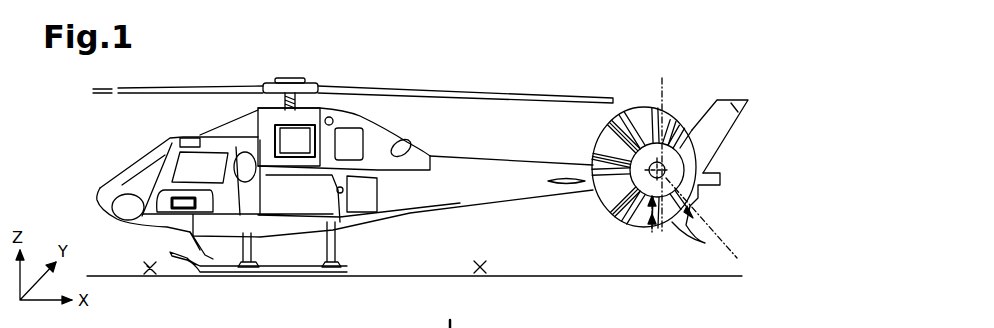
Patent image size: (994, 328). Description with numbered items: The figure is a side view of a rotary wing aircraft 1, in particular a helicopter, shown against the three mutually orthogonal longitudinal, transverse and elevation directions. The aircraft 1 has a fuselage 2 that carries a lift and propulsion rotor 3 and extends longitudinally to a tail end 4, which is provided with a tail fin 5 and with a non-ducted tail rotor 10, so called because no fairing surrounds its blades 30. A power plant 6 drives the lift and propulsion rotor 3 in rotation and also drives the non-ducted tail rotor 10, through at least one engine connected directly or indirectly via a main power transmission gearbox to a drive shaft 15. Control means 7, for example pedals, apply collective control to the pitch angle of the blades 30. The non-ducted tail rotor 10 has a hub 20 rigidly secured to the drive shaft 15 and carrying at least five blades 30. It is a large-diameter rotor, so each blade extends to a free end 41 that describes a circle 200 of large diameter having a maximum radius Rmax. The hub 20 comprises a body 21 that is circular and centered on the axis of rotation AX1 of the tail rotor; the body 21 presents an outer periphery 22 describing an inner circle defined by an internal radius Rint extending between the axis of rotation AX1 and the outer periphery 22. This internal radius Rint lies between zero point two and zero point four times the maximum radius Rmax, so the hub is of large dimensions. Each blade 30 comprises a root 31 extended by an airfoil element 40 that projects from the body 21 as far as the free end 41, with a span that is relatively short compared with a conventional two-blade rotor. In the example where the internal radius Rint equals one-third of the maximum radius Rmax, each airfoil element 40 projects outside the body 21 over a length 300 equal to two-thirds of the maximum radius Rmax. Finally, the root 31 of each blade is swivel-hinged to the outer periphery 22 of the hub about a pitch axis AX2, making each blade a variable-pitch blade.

The rotary wing aircraft 1 is at (142, 245).
The fuselage 2 is at (410, 213).
The lift and propulsion rotor 3 is at (318, 68).
The tail end 4 is at (733, 55).
The tail fin 5 is at (747, 100).
The power plant 6 is at (289, 137).
The control means 7 is at (167, 185).
The non-ducted tail rotor 10 is at (668, 228).
The drive shaft 15 is at (694, 197).
The hub 20 is at (603, 185).
The body 21 is at (625, 195).
The outer periphery 22 is at (599, 153).
The blade 30 is at (641, 198).
The root 31 is at (616, 138).
The airfoil element 40 is at (677, 108).
The free end 41 is at (724, 117).
The circle 200 is at (654, 108).
The length 300 is at (646, 230).
The axis of rotation AX1 is at (668, 97).
The pitch axis AX2 is at (732, 246).
The maximum radius Rmax is at (650, 107).
The internal radius Rint is at (690, 168).